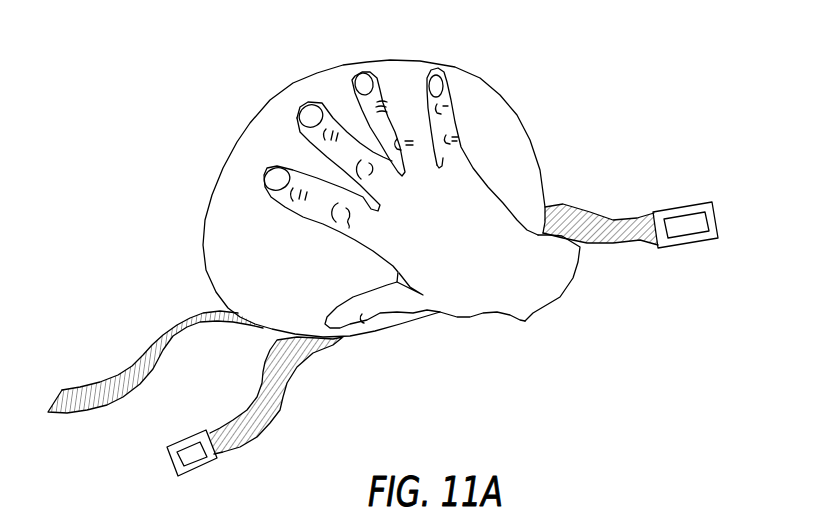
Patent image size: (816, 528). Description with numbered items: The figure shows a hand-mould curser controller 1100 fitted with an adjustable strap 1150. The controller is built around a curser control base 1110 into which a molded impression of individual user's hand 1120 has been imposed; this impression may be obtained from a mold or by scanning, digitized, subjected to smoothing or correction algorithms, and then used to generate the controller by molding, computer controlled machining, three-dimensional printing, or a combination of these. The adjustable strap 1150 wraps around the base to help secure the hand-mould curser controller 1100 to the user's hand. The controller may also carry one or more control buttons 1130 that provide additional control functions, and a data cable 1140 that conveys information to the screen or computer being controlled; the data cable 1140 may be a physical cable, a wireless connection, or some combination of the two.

The hand-mould curser controller 1100 is at (368, 246).
The curser control base 1110 is at (341, 198).
The molded impression of individual user's hand 1120 is at (563, 170).
The control buttons 1130 is at (399, 172).
The data cable 1140 is at (180, 382).
The adjustable strap 1150 is at (478, 398).